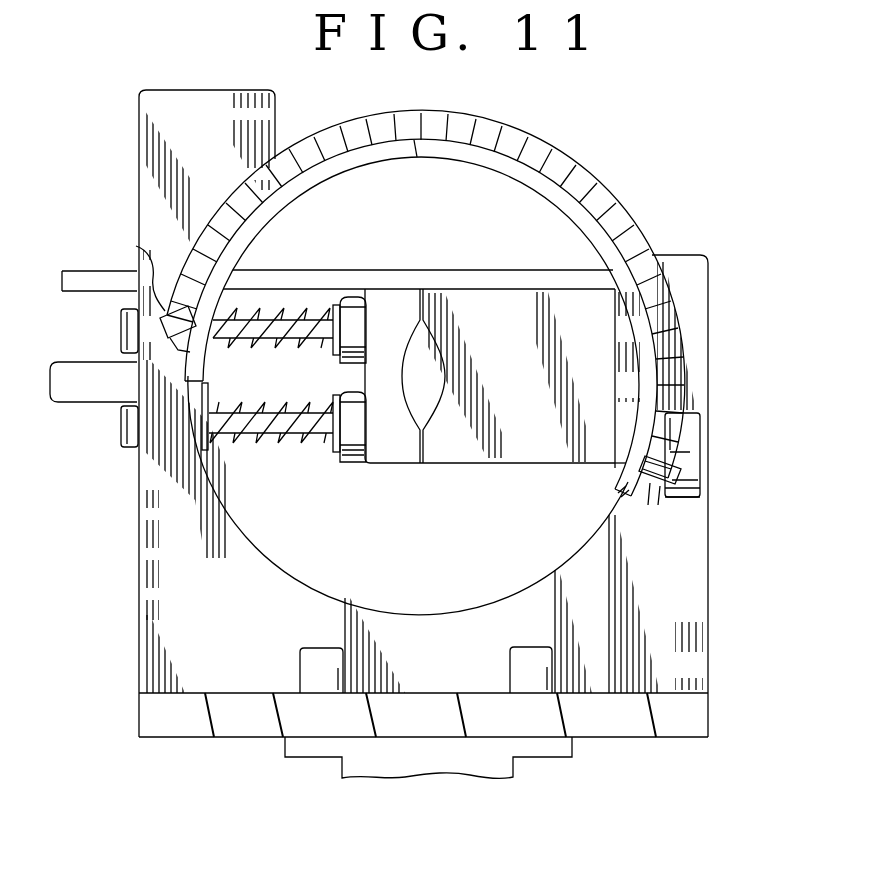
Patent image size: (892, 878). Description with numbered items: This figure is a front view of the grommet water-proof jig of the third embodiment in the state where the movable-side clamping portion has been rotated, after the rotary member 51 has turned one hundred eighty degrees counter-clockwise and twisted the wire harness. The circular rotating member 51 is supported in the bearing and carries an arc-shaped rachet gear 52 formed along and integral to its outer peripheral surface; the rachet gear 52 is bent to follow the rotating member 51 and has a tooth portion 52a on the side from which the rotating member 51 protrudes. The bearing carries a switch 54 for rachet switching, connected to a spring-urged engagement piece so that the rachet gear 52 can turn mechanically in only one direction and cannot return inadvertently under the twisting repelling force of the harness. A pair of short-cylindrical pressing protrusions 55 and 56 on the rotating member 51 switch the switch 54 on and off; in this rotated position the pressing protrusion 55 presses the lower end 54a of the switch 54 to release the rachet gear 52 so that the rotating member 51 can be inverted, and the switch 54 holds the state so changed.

The rotating member 51 is at (313, 178).
The rachet gear 52 is at (577, 163).
The tooth portion 52a is at (613, 190).
The switch 54 is at (693, 410).
The one end of the switching portion 54a is at (700, 503).
The pressing protrusion 55 is at (647, 490).
The pressing protrusion 56 is at (136, 246).